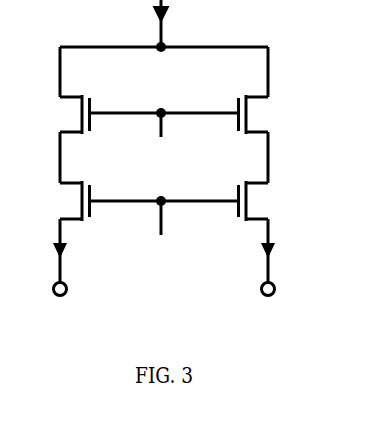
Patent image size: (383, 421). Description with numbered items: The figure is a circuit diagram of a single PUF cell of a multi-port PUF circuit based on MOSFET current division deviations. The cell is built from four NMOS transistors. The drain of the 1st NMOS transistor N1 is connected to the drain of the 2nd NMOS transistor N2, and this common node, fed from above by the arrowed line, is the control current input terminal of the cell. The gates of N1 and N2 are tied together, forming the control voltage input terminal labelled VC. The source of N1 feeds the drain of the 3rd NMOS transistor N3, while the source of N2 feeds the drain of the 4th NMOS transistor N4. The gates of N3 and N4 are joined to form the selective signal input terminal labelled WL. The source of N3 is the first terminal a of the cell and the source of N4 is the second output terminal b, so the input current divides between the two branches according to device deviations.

The 1st NMOS transistor N1 is at (89, 114).
The 2nd NMOS transistor N2 is at (236, 114).
The 3rd NMOS transistor N3 is at (89, 201).
The 4th NMOS transistor N4 is at (236, 201).
The control voltage node VC is at (162, 142).
The word line node WL is at (163, 237).
The output terminal a is at (60, 309).
The output terminal b is at (269, 309).